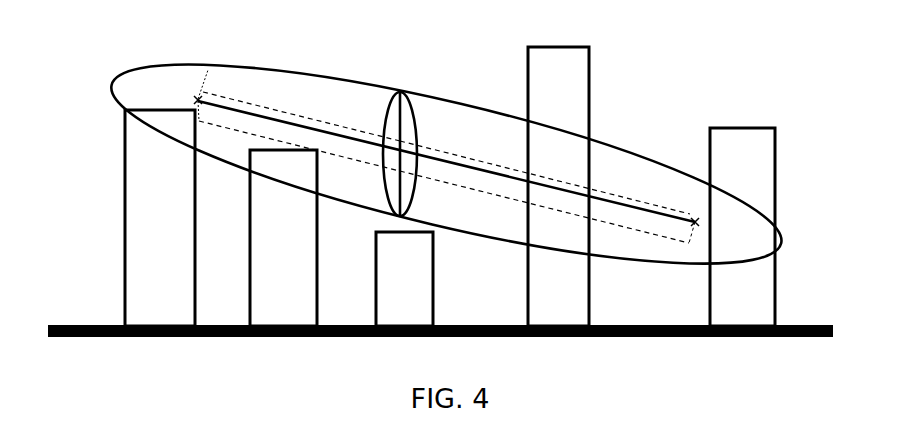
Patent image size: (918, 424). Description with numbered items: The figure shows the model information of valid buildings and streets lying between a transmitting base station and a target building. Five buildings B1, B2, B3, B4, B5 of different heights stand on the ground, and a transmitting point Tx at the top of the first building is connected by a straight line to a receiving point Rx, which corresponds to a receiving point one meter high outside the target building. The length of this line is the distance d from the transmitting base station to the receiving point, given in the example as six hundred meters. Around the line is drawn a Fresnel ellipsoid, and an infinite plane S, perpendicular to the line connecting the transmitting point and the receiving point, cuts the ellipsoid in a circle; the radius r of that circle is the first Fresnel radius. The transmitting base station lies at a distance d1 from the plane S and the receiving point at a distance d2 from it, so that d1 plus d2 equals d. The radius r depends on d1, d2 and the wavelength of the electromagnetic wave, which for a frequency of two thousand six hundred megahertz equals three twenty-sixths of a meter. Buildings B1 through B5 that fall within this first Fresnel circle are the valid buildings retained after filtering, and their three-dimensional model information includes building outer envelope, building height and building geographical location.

The building 1 B1 is at (160, 218).
The building 2 B2 is at (283, 238).
The building 3 B3 is at (404, 279).
The building 4 B4 is at (558, 186).
The building 5 B5 is at (742, 227).
The transmitter Tx is at (190, 89).
The receiver Rx is at (686, 217).
The distance from the transmitting base station to the receiving point d is at (446, 161).
The distance between the transmitting base station and the plane S d1 is at (301, 116).
The distance between the receiving point and the plane S d2 is at (545, 177).
The radius of the first Fresnel circle r is at (400, 154).